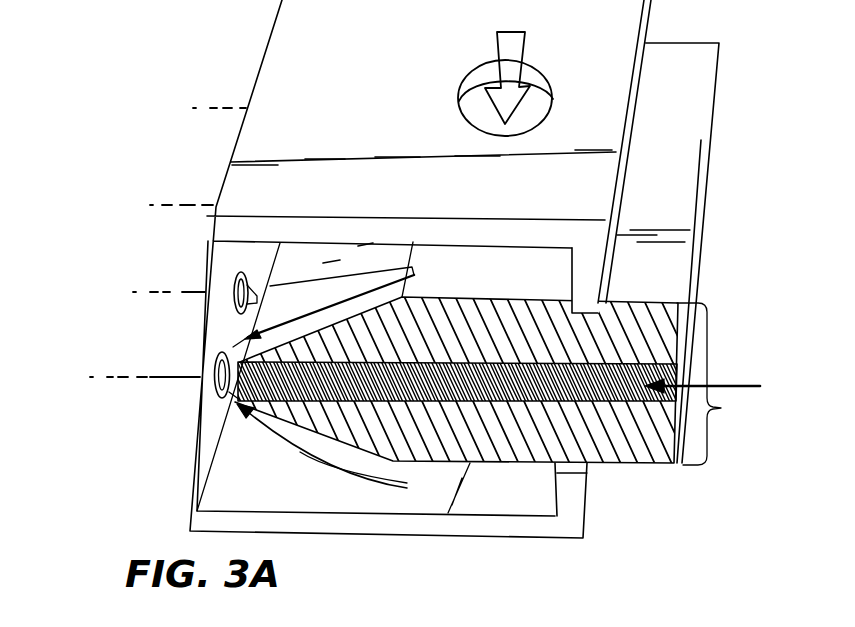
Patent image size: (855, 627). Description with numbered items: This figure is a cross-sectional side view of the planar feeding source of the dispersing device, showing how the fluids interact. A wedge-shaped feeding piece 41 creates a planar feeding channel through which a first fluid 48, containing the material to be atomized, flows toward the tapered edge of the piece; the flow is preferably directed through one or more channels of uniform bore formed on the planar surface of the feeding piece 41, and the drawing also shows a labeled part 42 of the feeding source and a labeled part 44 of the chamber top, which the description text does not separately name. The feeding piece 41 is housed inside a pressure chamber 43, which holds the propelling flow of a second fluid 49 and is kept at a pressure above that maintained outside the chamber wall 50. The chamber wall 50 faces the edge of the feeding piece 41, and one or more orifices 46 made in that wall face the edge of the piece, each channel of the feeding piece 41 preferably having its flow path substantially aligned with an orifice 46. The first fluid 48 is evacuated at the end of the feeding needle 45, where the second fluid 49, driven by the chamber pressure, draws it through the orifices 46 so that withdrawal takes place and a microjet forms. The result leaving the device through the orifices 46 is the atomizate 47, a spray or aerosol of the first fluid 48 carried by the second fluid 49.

The feeding piece 41 is at (476, 380).
The sample channel 42 is at (678, 360).
The pressure chamber 43 is at (312, 501).
The inlet opening 44 is at (553, 97).
The end of the feeding needle 45 is at (235, 393).
The orifices 46 is at (215, 360).
The atomizate 47 is at (97, 359).
The first fluid 48 is at (753, 380).
The second fluid 49 is at (496, 43).
The chamber wall 50 is at (197, 447).